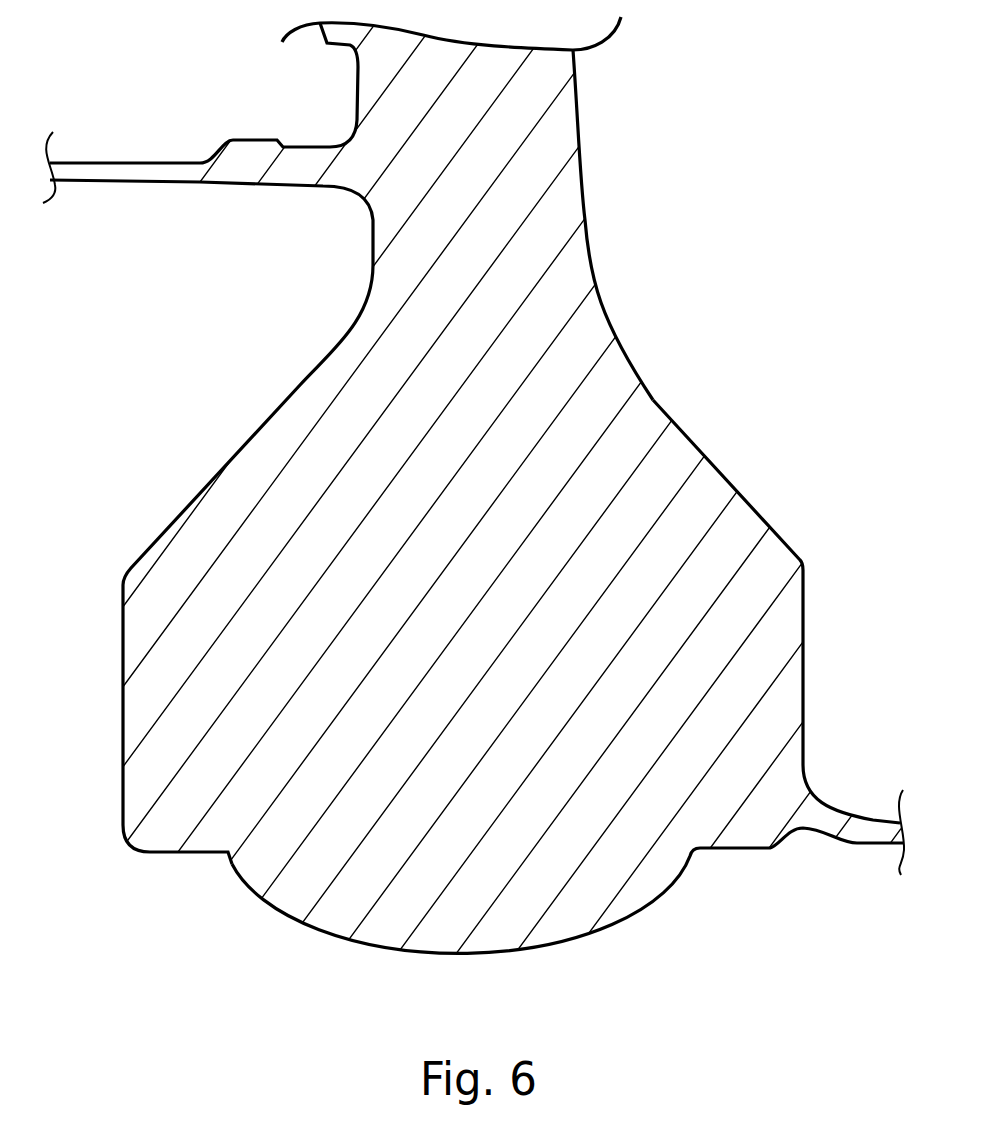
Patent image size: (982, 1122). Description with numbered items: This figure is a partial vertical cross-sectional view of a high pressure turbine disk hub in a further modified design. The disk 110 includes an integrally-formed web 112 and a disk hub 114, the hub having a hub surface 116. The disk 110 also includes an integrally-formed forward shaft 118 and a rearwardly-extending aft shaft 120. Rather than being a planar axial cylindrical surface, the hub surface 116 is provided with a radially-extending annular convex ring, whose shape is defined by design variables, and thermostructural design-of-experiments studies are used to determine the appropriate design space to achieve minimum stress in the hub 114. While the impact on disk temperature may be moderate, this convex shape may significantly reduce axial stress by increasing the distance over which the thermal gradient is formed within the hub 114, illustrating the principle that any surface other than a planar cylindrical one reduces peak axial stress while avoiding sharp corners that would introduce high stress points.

The disk 110 is at (491, 561).
The web 112 is at (557, 138).
The disk hub 114 is at (157, 728).
The hub surface 116 is at (163, 853).
The forward shaft 118 is at (122, 160).
The aft shaft 120 is at (870, 838).